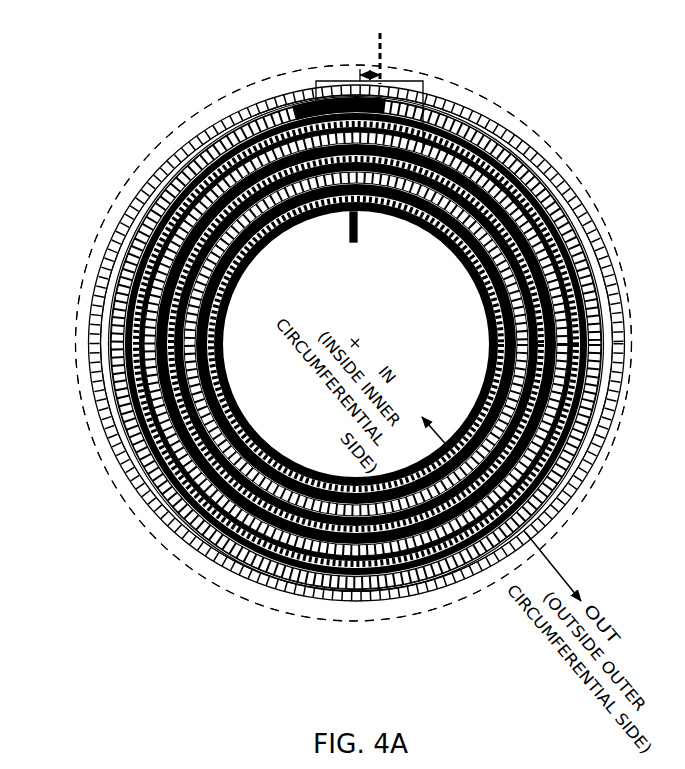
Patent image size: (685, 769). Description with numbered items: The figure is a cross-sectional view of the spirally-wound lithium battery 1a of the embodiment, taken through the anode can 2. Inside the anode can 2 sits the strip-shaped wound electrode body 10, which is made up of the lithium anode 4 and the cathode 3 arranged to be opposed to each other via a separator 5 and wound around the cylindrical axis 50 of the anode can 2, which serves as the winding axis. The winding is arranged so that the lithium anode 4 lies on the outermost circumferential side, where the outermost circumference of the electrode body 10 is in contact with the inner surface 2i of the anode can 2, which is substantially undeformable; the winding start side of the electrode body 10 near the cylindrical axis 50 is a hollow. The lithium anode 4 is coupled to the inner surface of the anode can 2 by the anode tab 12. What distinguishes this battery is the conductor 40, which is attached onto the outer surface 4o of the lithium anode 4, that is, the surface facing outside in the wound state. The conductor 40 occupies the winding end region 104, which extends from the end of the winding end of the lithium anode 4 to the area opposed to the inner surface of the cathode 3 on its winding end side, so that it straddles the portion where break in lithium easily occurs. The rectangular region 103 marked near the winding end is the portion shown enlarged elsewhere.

The lithium battery 1a is at (157, 98).
The anode can 2 is at (490, 121).
The inner surface of anode can 2i is at (546, 187).
The cathode 3 is at (218, 350).
The lithium anode 4 is at (150, 457).
The outer surface of lithium anode 4o is at (232, 110).
The separator 5 is at (343, 212).
The cylindrical axis 50 is at (348, 330).
The wound electrode body 10 is at (453, 130).
The anode tab 12 is at (117, 220).
The conductor 40 is at (577, 260).
The outer end portion 103 is at (325, 72).
The winding end region 104 is at (542, 137).